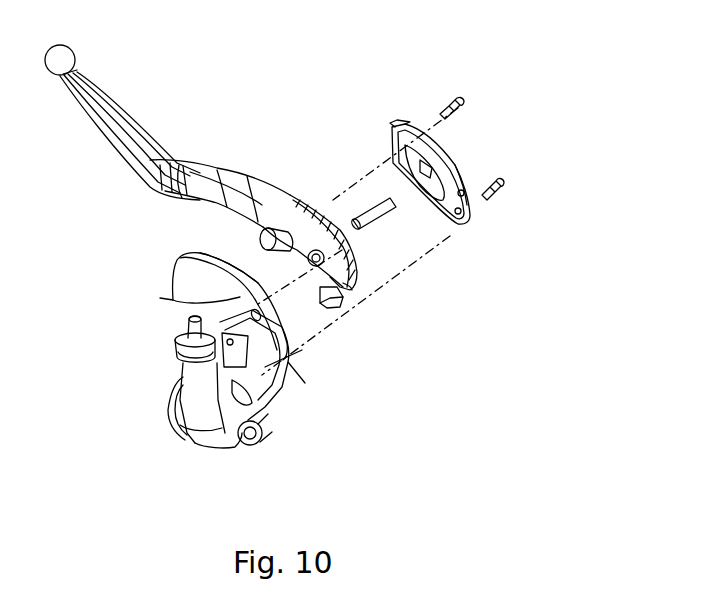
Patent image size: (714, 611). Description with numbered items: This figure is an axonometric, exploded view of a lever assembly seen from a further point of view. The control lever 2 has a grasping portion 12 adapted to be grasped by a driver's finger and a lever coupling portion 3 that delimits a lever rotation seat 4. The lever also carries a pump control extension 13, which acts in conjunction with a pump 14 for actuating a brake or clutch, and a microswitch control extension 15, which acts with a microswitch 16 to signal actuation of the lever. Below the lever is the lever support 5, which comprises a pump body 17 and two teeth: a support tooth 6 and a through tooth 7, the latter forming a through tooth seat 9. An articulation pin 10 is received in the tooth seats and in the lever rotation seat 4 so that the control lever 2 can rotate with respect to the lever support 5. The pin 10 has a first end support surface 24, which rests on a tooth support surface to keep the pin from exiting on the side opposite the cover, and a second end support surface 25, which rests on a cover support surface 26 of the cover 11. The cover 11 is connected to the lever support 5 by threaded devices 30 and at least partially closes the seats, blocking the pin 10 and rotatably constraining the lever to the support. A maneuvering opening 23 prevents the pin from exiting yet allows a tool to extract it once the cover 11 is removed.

The control lever 2 is at (217, 170).
The lever coupling portion 3 is at (317, 220).
The lever rotation seat 4 is at (343, 284).
The lever support 5 is at (285, 350).
The support tooth 6 is at (178, 325).
The through tooth 7 is at (210, 302).
The through tooth seat 9 is at (255, 270).
The articulation pin 10 is at (401, 203).
The cover 11 is at (464, 173).
The grasping portion 12 is at (147, 135).
The pump control extension 13 is at (260, 244).
The pump 14 is at (205, 388).
The microswitch control extension 15 is at (337, 307).
The microswitch 16 is at (262, 436).
The pump body 17 is at (205, 400).
The maneuvering opening 23 is at (257, 372).
The first end support surface 24 is at (362, 236).
The second end support surface 25 is at (398, 200).
The cover support surface 26 is at (462, 166).
The threaded devices 30 is at (444, 100).